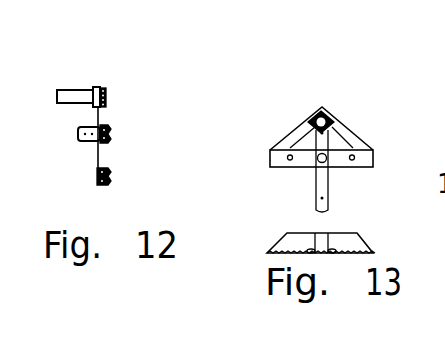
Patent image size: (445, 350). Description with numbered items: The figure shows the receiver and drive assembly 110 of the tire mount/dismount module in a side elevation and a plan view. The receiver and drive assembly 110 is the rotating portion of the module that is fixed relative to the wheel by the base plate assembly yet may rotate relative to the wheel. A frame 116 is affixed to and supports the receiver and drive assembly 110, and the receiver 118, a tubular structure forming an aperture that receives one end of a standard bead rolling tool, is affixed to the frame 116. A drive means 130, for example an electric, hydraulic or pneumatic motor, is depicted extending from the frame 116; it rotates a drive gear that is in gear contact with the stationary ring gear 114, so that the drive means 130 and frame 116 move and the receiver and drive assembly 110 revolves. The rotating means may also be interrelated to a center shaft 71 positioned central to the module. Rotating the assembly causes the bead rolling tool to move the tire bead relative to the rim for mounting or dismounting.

In FIG. 12, the receiver and drive assembly 110 is at (123, 74).
In FIG. 12, the drive means 130 is at (73, 97).
In FIG. 13, the drive means 130 is at (320, 112).
In FIG. 12, the stationary ring gear 114 is at (108, 95).
In FIG. 12, the center shaft 71 is at (92, 143).
In FIG. 13, the frame 116 is at (340, 130).
In FIG. 13, the receiver 118 is at (283, 165).